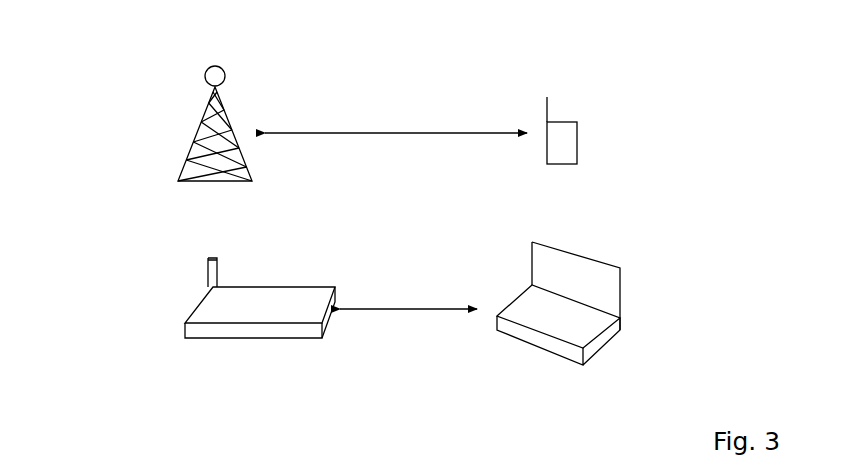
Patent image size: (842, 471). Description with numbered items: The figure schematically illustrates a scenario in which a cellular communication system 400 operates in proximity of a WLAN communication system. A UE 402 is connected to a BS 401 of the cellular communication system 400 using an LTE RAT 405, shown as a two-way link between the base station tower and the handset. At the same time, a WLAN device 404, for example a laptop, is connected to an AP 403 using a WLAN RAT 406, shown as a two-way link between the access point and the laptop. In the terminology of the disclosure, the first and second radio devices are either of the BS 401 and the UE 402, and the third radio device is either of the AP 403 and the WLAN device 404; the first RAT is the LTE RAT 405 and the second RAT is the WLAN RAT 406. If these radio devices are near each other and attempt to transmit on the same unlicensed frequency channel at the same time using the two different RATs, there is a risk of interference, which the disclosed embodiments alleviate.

The cellular communication system 400 is at (121, 57).
The BS 401 is at (238, 26).
The UE 402 is at (585, 28).
The AP 403 is at (245, 398).
The WLAN device 404 is at (590, 393).
The LTE RAT 405 is at (363, 128).
The WLAN RAT 406 is at (383, 285).